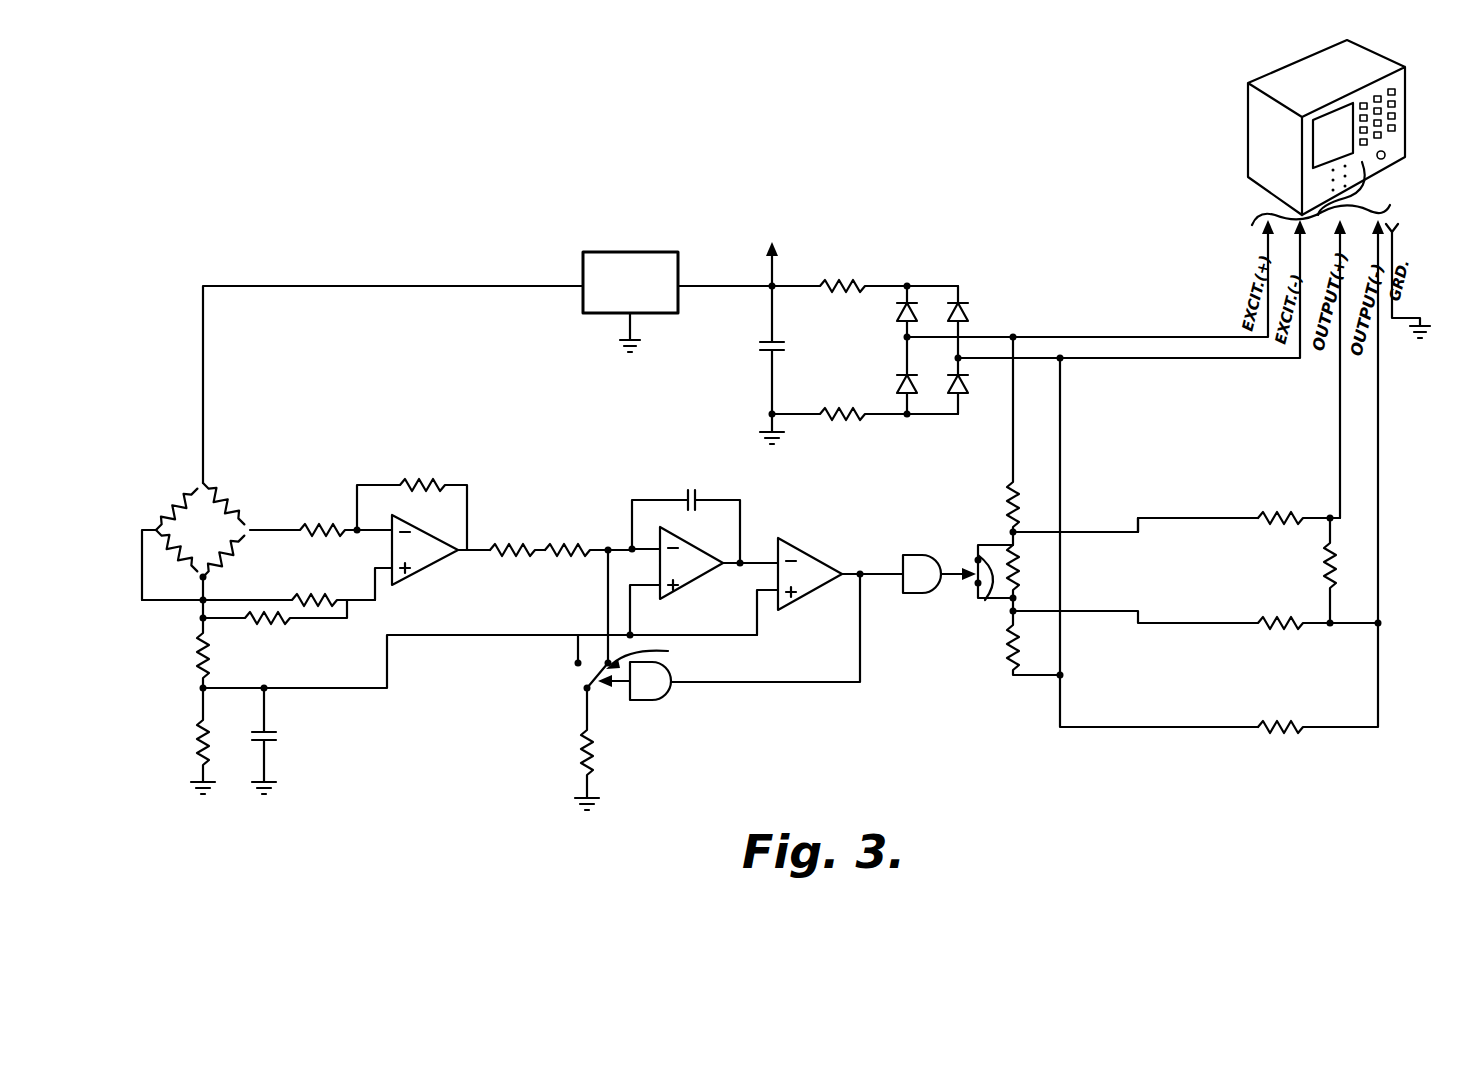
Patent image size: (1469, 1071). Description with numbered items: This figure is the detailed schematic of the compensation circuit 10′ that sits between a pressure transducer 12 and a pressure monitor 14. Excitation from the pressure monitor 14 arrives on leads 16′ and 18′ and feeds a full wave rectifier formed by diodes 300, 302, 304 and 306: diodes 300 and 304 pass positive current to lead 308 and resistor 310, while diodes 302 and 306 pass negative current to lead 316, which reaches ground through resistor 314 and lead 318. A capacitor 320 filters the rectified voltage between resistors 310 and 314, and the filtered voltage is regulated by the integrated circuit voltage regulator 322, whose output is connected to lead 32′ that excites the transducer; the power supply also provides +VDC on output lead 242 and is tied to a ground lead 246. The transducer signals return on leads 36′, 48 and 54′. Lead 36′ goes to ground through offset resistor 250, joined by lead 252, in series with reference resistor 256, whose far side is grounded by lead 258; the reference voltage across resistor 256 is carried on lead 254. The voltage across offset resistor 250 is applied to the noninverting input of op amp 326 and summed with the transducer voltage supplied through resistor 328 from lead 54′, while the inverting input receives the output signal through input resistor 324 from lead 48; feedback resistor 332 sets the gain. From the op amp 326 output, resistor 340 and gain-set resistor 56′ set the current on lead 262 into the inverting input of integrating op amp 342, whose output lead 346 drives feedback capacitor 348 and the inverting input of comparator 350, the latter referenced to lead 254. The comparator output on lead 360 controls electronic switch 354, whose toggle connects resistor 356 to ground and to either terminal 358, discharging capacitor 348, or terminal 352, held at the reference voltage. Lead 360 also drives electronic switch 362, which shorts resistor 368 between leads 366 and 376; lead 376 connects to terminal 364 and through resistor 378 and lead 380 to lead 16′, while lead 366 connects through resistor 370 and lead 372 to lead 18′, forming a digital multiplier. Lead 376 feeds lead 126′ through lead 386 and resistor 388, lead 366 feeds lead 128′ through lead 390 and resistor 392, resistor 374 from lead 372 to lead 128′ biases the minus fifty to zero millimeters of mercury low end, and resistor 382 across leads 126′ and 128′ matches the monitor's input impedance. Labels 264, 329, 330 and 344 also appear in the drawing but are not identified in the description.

The compensation circuit 10′ is at (597, 245).
The pressure transducer 12 is at (180, 486).
The pressure monitor 14 is at (1410, 118).
The lead 16′ is at (1092, 334).
The lead 18′ is at (1105, 366).
The lead 32′ is at (358, 296).
The lead 36′ is at (210, 585).
The lead 48 is at (270, 525).
The lead 54′ is at (155, 600).
The gain-set resistor 56′ is at (572, 540).
The lead 126′ is at (1338, 430).
The lead 128′ is at (1380, 455).
The output lead 242 is at (775, 268).
The ground lead 246 is at (622, 328).
The offset resistor 250 is at (200, 664).
The lead 252 is at (202, 626).
The lead 254 is at (240, 688).
The resistor 256 is at (200, 742).
The lead 258 is at (200, 778).
The lead 262 is at (586, 552).
The junction 264 is at (540, 555).
The diode 300 is at (915, 300).
The diode 302 is at (897, 385).
The diode 304 is at (965, 300).
The diode 306 is at (962, 398).
The lead 308 is at (870, 280).
The resistor 310 is at (836, 290).
The resistor 314 is at (838, 426).
The lead 316 is at (887, 414).
The lead 318 is at (768, 400).
The capacitor 320 is at (768, 354).
The integrated circuit voltage regulator 322 is at (630, 250).
The input resistor 324 is at (312, 522).
The op amp 326 is at (436, 542).
The resistor 328 is at (314, 595).
The resistor 329 is at (266, 622).
The amplifier output 330 is at (468, 553).
The feedback resistor 332 is at (420, 485).
The resistor 340 is at (510, 545).
The integrating op amp 342 is at (705, 556).
The capacitor 344 is at (278, 738).
The lead 346 is at (732, 566).
The feedback capacitor 348 is at (700, 502).
The comparator 350 is at (806, 556).
The terminal 352 is at (552, 686).
The electronic switch 354 is at (672, 693).
The resistor 356 is at (622, 748).
The terminal 358 is at (658, 655).
The lead 360 is at (860, 668).
The electronic switch 362 is at (918, 555).
The terminal 364 is at (985, 600).
The lead 366 is at (1015, 598).
The resistor 368 is at (1020, 580).
The resistor 370 is at (1010, 650).
The lead 372 is at (1063, 690).
The resistor 374 is at (1282, 718).
The lead 376 is at (1020, 530).
The resistor 378 is at (1020, 510).
The lead 380 is at (1017, 450).
The resistor 382 is at (1336, 558).
The lead 386 is at (1232, 518).
The resistor 388 is at (1260, 525).
The lead 390 is at (1232, 622).
The resistor 392 is at (1265, 634).